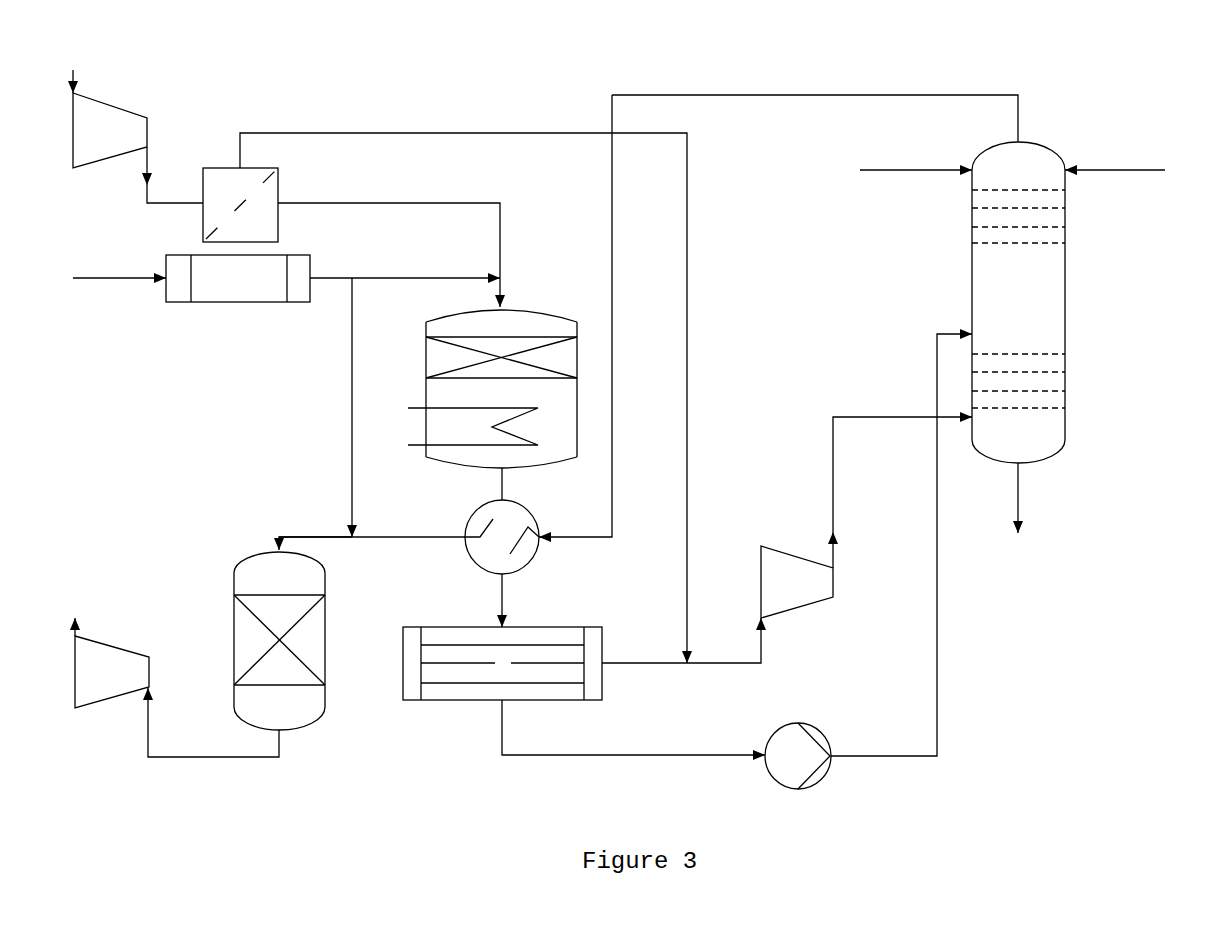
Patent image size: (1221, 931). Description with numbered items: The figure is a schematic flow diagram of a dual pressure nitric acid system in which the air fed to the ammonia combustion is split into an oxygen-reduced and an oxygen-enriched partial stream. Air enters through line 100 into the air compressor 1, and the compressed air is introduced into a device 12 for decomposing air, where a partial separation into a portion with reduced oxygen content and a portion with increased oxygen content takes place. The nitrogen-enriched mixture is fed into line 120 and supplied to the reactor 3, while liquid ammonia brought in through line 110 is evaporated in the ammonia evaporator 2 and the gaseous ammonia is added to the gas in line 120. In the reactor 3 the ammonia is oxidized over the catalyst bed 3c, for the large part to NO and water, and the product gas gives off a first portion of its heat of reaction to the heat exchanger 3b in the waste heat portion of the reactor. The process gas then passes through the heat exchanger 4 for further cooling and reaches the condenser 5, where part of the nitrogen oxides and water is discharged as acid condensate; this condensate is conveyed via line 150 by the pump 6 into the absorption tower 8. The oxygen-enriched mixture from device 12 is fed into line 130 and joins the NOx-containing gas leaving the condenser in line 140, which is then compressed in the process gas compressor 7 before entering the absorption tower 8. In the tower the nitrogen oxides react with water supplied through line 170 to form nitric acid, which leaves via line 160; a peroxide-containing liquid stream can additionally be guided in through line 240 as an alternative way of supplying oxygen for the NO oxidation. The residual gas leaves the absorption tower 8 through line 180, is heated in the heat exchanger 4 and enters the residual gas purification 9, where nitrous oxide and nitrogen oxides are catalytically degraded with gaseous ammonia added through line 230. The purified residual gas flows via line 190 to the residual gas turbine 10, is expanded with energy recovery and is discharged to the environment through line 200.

The air compressor 1 is at (138, 148).
The ammonia evaporator 2 is at (333, 278).
The reactor 3 is at (480, 405).
The heat exchanger 3b is at (460, 432).
The catalyst bed 3c is at (501, 357).
The heat exchanger 4 is at (445, 361).
The condenser 5 is at (502, 663).
The pump 6 is at (868, 561).
The process gas compressor 7 is at (866, 517).
The absorption tower 8 is at (1018, 302).
The residual gas purification 9 is at (279, 641).
The residual gas turbine 10 is at (112, 672).
The device for decomposing air 12 is at (240, 205).
The line 100 is at (74, 69).
The line 110 is at (119, 264).
The line 120 is at (389, 242).
The line 130 is at (463, 382).
The line 140 is at (681, 640).
The line 150 is at (633, 745).
The line 160 is at (1020, 516).
The line 170 is at (895, 171).
The line 180 is at (815, 104).
The line 190 is at (213, 738).
The line 200 is at (74, 612).
The line 230 is at (315, 414).
The line 240 is at (1141, 171).